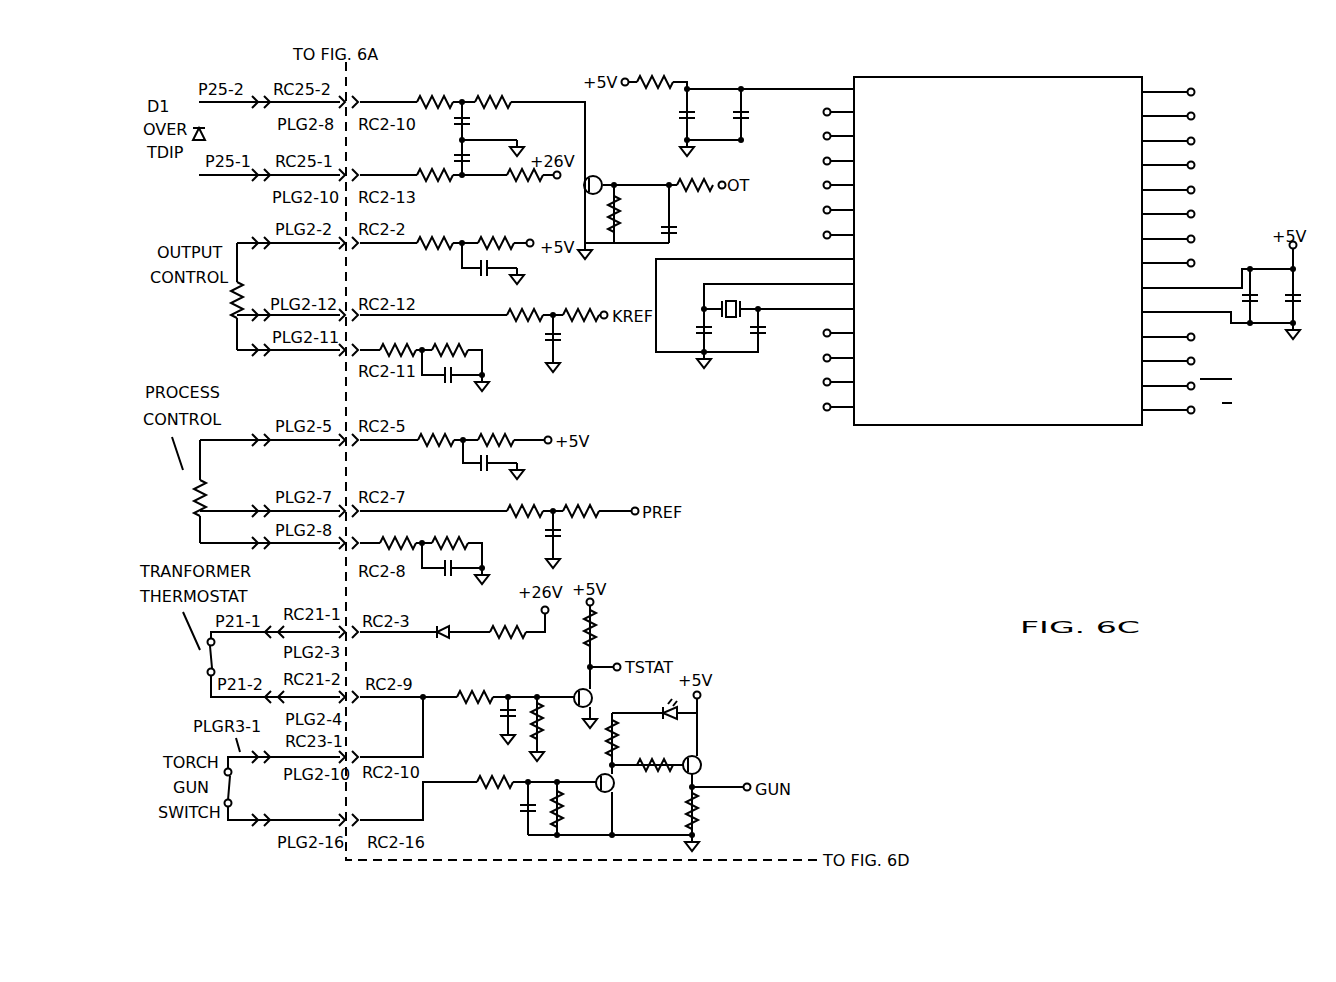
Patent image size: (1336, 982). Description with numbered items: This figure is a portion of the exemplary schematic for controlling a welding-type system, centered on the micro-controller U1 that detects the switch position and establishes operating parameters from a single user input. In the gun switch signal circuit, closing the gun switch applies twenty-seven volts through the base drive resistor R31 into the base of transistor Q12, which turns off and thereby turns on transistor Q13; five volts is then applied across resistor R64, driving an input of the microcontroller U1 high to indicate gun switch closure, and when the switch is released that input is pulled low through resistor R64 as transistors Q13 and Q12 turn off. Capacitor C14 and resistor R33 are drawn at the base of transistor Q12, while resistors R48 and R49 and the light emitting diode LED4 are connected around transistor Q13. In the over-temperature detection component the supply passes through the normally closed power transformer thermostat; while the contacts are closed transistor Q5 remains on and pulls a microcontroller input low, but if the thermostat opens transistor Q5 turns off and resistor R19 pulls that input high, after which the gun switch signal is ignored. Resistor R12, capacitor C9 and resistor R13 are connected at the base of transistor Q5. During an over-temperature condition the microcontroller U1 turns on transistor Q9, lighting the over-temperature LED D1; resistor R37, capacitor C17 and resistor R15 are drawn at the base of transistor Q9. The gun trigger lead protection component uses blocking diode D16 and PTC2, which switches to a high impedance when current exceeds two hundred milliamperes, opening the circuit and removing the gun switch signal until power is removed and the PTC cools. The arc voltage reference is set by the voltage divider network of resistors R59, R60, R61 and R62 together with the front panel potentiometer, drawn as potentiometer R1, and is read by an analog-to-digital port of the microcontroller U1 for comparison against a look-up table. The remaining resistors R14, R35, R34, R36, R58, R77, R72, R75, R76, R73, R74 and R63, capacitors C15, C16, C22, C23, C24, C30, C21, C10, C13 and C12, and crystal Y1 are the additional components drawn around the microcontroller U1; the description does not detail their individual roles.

The micro-controller U1 is at (1009, 248).
The resistor R14 is at (435, 93).
The resistor R35 is at (493, 93).
The capacitor C15 is at (480, 124).
The capacitor C16 is at (480, 162).
The resistor R34 is at (435, 166).
The resistor R36 is at (525, 188).
The over-temperature LED D1 is at (176, 118).
The transistor Q9 is at (599, 174).
The resistor R37 is at (632, 214).
The capacitor C17 is at (689, 234).
The resistor R15 is at (696, 198).
The resistor R63 is at (655, 72).
The capacitor C23 is at (566, 259).
The capacitor C24 is at (609, 208).
The resistor R61 is at (435, 233).
The resistor R62 is at (496, 233).
The potentiometer R1 is at (208, 399).
The resistor R59 is at (461, 332).
The resistor R58 is at (581, 306).
The capacitor C22 is at (572, 442).
The resistor R60 is at (450, 340).
The resistor R77 is at (436, 429).
The resistor R72 is at (496, 429).
The capacitor C30 is at (488, 477).
The resistor R75 is at (525, 523).
The resistor R76 is at (581, 502).
The resistor R73 is at (398, 534).
The resistor R74 is at (450, 534).
The capacitor C21 is at (453, 583).
The blocking diode D16 is at (439, 624).
The PTC PTC2 is at (507, 624).
The resistor R19 is at (608, 628).
The transistor Q5 is at (598, 699).
The resistor R12 is at (475, 686).
The capacitor C9 is at (631, 527).
The resistor R13 is at (554, 721).
The light emitting diode LED4 is at (663, 704).
The resistor R48 is at (595, 739).
The resistor R49 is at (655, 755).
The transistor Q13 is at (710, 766).
The transistor Q12 is at (623, 785).
The base drive resistor R31 is at (495, 771).
The capacitor C14 is at (512, 806).
The resistor R33 is at (574, 809).
The resistor R64 is at (709, 811).
The crystal Y1 is at (728, 325).
The capacitor C10 is at (686, 329).
The capacitor C13 is at (1266, 289).
The capacitor C12 is at (1308, 297).